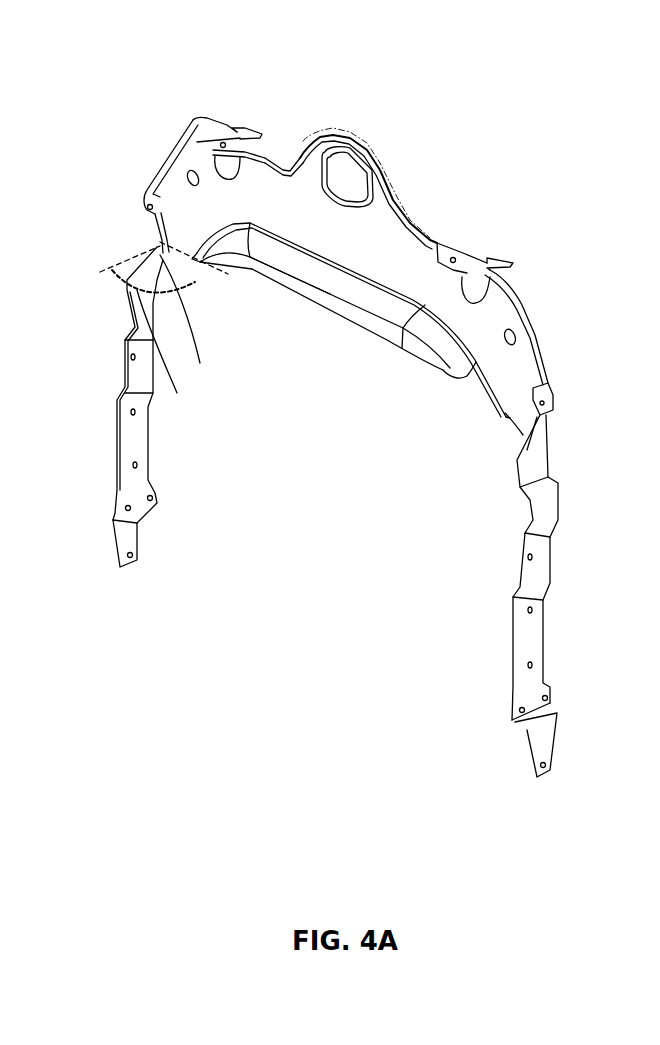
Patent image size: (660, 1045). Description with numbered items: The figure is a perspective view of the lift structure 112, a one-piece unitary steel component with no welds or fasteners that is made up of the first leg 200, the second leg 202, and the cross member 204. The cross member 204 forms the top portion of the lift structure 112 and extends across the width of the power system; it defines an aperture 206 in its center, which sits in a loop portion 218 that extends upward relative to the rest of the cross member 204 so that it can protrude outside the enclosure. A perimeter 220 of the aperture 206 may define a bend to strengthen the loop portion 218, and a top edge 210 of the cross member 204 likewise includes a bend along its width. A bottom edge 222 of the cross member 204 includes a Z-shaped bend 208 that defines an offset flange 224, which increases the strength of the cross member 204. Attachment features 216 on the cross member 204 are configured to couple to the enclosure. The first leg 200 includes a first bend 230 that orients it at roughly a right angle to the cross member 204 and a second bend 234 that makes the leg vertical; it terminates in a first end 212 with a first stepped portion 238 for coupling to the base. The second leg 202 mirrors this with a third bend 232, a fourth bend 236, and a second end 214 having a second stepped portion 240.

The lift structure 112 is at (160, 58).
The first leg 200 is at (137, 378).
The second leg 202 is at (540, 580).
The cross member 204 is at (370, 253).
The aperture 206 is at (356, 180).
The Z-shaped bend 208 is at (350, 293).
The top edge 210 is at (290, 160).
The first end 212 is at (150, 530).
The second end 214 is at (503, 733).
The attachment features 216 is at (246, 122).
The loop portion 218 is at (380, 200).
The perimeter 220 is at (380, 178).
The bottom edge 222 is at (478, 393).
The offset flange 224 is at (304, 288).
The first bend 230 is at (190, 323).
The third bend 232 is at (548, 423).
The second bend 234 is at (167, 355).
The fourth bend 236 is at (550, 480).
The first stepped portion 238 is at (110, 505).
The second stepped portion 240 is at (560, 695).